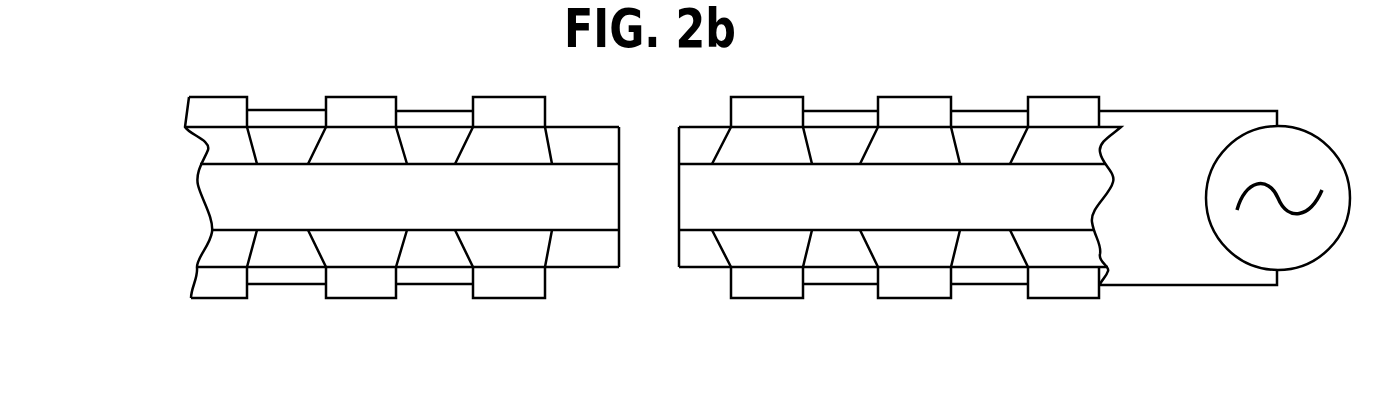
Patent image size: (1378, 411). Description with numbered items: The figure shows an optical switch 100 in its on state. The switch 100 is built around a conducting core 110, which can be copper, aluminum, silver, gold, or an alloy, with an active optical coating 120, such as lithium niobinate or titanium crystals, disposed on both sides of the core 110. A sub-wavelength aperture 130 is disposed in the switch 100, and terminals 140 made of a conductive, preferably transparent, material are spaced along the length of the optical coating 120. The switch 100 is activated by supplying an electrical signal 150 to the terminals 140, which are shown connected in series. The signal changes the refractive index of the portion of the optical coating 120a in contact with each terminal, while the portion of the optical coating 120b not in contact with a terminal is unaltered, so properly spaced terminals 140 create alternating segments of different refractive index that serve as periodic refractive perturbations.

The optical switch 100 is at (202, 316).
The conducting core 110 is at (222, 208).
The active optical coating 120 is at (646, 133).
The portion of optical coating in contact with terminal 120a is at (373, 248).
The portion of optical coating not in contact with terminal 120b is at (592, 248).
The sub-wavelength aperture 130 is at (677, 120).
The terminals 140 is at (980, 83).
The electrical signal 150 is at (1297, 118).